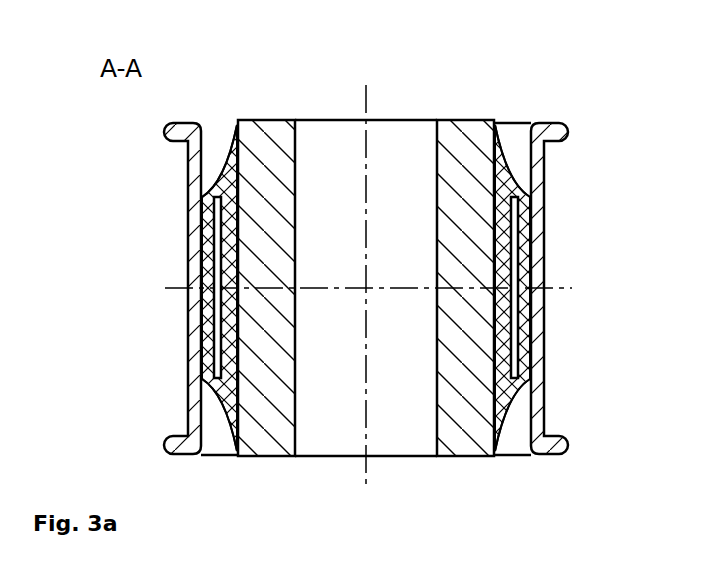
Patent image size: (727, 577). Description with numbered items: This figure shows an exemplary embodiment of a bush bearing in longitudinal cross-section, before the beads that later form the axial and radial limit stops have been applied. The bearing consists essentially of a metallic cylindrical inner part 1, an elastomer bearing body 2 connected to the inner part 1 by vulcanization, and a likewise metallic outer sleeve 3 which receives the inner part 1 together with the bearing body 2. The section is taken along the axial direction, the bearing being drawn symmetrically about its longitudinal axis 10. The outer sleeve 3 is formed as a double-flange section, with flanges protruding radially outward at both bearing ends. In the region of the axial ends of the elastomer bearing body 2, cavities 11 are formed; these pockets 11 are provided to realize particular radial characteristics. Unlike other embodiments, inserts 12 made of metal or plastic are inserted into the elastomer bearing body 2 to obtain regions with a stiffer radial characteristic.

The inner part 1 is at (428, 288).
The elastomer bearing body 2 is at (506, 187).
The outer sleeve 3 is at (312, 288).
The longitudinal axis 10 is at (365, 108).
The cavities 11 is at (509, 145).
The inserts 12 is at (414, 289).